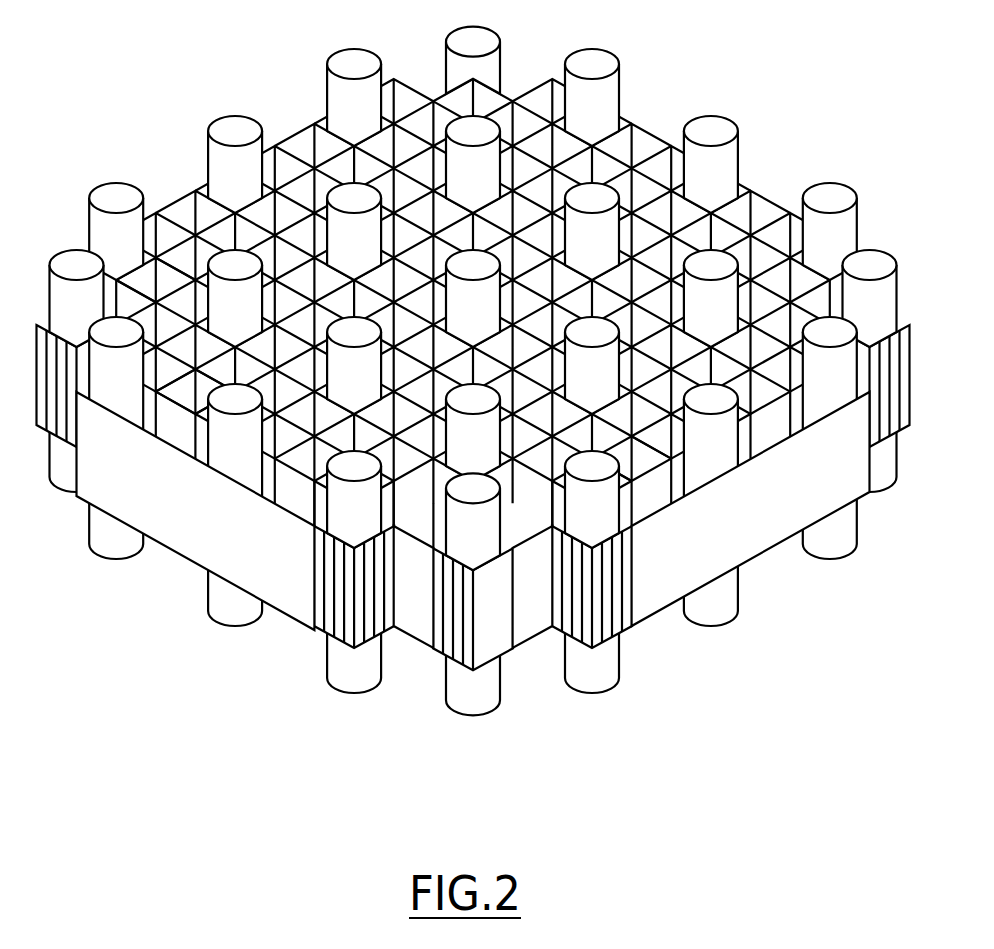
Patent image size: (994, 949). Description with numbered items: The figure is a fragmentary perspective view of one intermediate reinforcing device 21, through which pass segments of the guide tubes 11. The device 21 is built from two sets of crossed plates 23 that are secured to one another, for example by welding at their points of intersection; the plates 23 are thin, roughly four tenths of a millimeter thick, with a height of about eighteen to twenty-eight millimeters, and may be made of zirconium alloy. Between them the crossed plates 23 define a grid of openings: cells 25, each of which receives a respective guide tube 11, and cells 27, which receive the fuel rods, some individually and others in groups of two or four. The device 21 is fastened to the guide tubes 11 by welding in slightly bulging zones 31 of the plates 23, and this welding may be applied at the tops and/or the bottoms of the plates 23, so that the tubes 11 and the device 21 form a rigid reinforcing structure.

The guide tube 11 is at (577, 93).
The intermediate reinforcing device 21 is at (651, 133).
The plate 23 is at (193, 253).
The cell 25 is at (320, 517).
The cell 27 is at (185, 427).
The bulging zone 31 is at (205, 535).